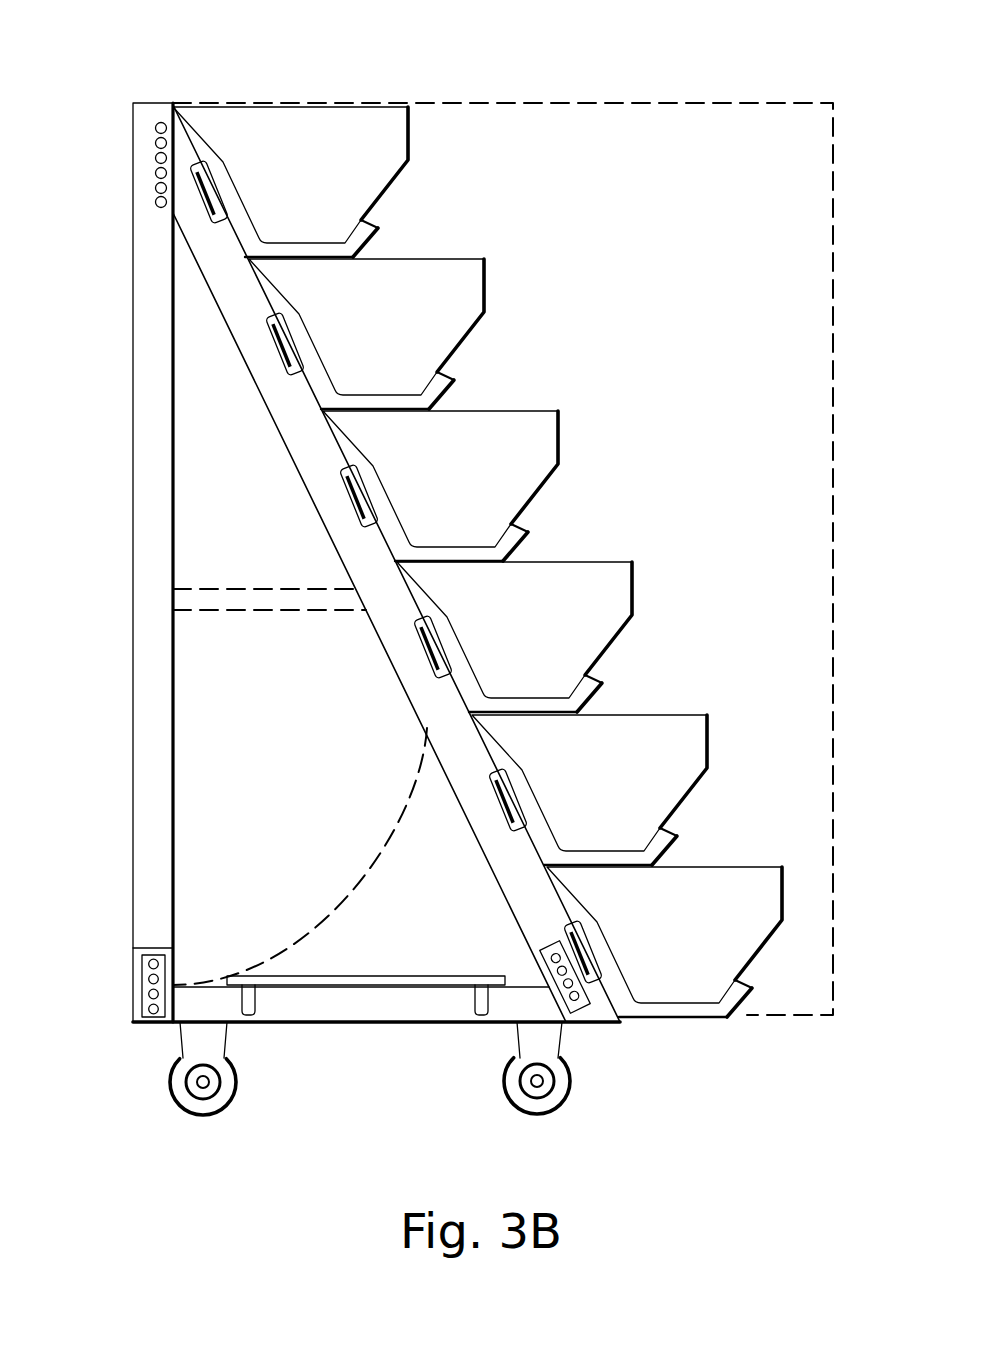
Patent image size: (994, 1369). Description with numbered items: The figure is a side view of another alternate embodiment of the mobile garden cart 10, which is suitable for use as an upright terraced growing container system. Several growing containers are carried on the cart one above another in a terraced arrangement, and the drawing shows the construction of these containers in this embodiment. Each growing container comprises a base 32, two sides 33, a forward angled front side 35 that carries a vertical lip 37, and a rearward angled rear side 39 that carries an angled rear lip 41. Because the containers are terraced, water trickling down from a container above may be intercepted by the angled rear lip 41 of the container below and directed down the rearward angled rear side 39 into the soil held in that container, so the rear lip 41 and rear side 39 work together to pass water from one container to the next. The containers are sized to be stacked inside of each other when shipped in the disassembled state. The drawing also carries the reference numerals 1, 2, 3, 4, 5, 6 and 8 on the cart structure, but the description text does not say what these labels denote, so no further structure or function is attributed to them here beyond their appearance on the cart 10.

The frame member 1 is at (130, 233).
The hook clip 2 is at (497, 798).
The caster wheel 3 is at (503, 1088).
The mounting plate 4 is at (148, 947).
The adjustment holes 5 is at (155, 143).
The shelf (phantom) 6 is at (337, 613).
The base shelf 8 is at (400, 975).
The mobile garden cart 10 is at (92, 558).
The base 32 is at (702, 998).
The sides 33 is at (732, 954).
The forward angled front side 35 is at (627, 790).
The vertical lip 37 is at (627, 751).
The rearward angled rear side 39 is at (327, 367).
The angled rear lip 41 is at (205, 135).